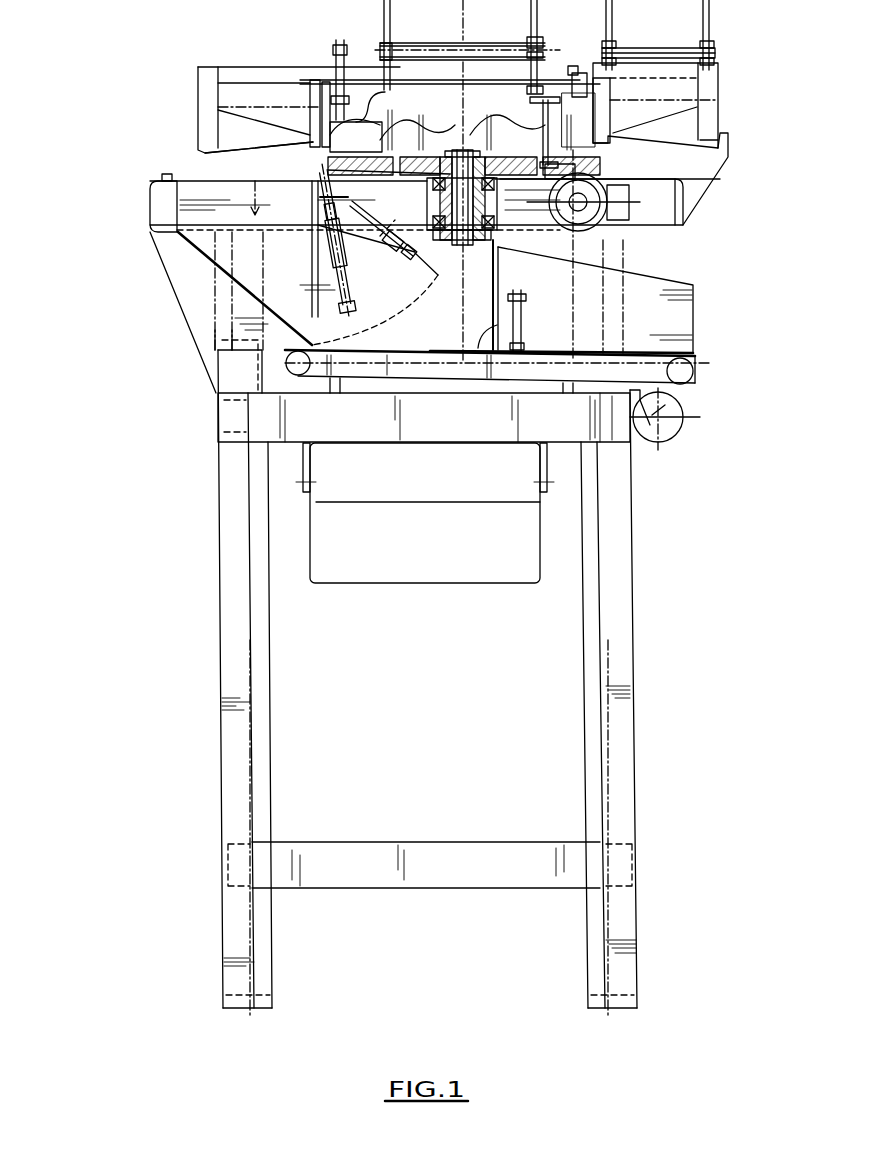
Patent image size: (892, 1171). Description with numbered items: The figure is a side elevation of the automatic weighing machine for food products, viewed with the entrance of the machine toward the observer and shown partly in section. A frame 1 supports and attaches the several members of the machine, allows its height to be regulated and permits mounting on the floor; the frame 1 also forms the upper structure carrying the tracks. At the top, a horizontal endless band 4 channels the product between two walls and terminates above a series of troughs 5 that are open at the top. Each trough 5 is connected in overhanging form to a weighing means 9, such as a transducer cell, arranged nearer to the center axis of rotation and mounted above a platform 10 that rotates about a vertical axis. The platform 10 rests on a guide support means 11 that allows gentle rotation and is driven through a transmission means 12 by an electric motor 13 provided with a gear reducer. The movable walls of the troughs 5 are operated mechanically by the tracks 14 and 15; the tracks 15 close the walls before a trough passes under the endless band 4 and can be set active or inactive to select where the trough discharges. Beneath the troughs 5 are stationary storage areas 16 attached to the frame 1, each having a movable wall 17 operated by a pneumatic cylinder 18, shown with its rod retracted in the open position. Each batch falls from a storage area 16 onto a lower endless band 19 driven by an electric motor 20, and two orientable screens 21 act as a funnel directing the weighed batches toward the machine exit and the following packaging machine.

The frame 1 is at (150, 210).
The endless band 4 is at (657, 48).
The troughs 5 is at (258, 95).
The weighing means 9 is at (366, 122).
The platform 10 is at (330, 157).
The guide support means 11 is at (455, 238).
The transmission means 12 is at (562, 171).
The electric motor 13 is at (600, 222).
The track 14 is at (335, 80).
The tracks 15 is at (582, 73).
The storage areas 16 is at (203, 237).
The movable wall 17 is at (303, 303).
The pneumatic cylinder 18 is at (320, 268).
The endless band 19 is at (560, 308).
The electric motor 20 is at (674, 426).
The screens 21 is at (680, 333).